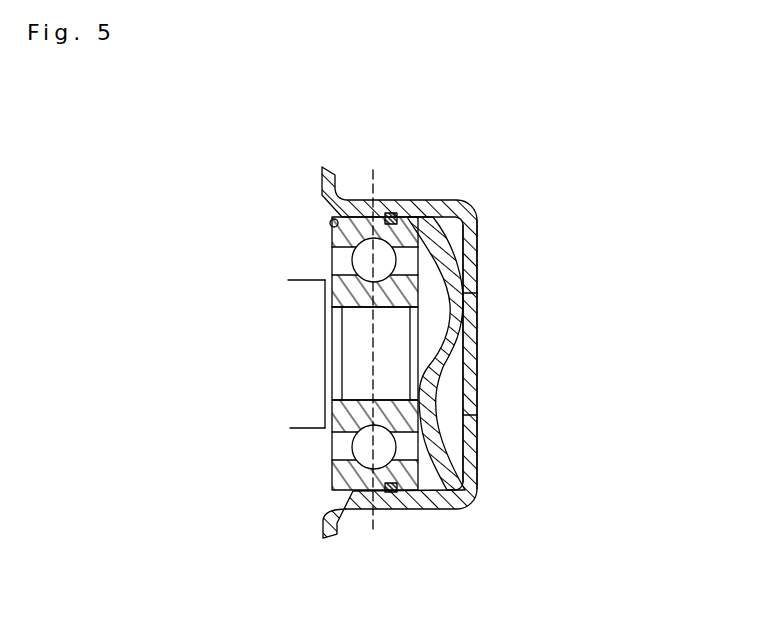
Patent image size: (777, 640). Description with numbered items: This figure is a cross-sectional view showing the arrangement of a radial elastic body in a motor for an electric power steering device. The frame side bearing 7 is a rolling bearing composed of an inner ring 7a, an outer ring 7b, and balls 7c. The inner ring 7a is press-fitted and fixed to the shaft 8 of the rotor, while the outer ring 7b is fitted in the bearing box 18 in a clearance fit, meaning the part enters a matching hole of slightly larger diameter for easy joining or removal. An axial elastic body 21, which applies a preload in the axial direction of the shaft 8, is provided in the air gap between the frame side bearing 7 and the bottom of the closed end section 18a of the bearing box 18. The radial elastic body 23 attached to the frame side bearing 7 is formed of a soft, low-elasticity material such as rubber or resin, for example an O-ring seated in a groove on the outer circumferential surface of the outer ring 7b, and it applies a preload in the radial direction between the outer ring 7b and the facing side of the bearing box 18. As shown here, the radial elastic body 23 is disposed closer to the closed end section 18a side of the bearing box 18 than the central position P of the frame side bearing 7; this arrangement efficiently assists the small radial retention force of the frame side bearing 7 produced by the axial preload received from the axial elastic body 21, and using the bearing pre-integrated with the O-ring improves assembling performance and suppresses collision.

The frame side bearing 7 is at (287, 347).
The inner ring 7a is at (333, 407).
The outer ring 7b is at (340, 475).
The balls 7c is at (358, 440).
The shaft 8 is at (360, 357).
The bearing box 18 is at (475, 397).
The closed end section 18a is at (477, 438).
The axial elastic body 21 is at (430, 420).
The radial elastic body 23 is at (390, 213).
The central position P is at (372, 196).